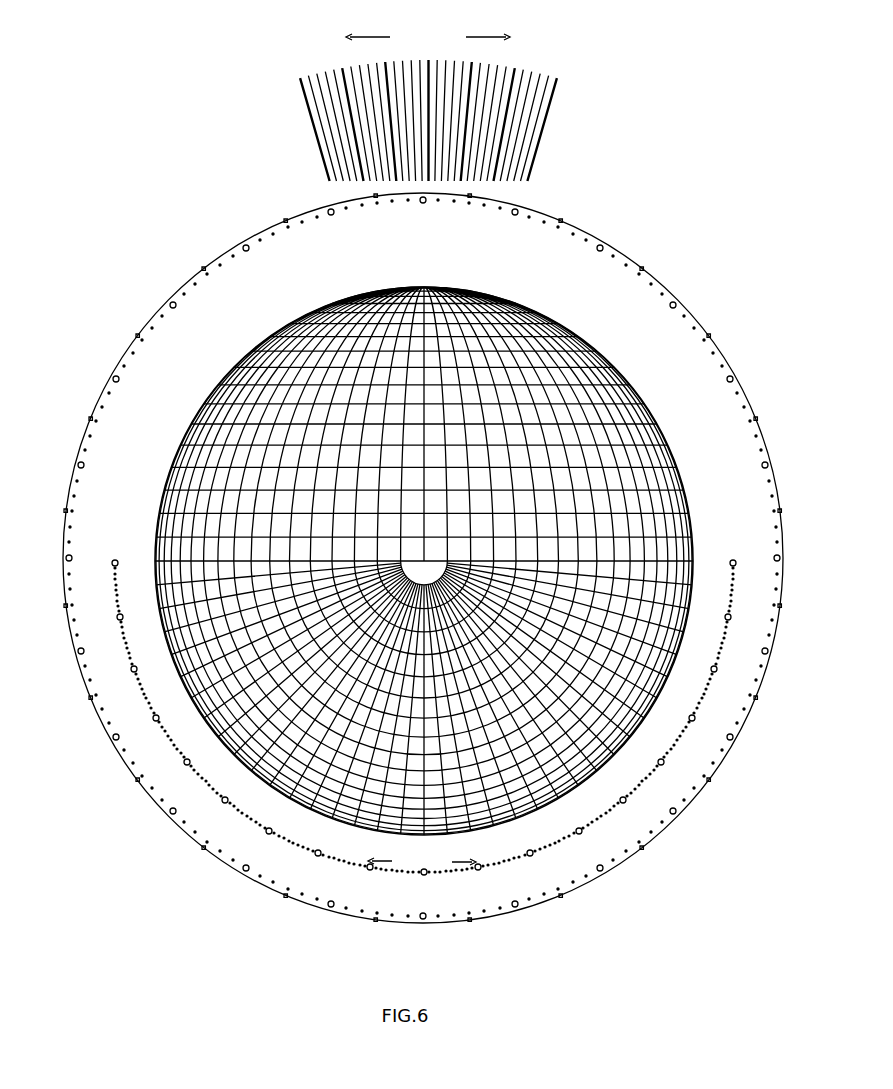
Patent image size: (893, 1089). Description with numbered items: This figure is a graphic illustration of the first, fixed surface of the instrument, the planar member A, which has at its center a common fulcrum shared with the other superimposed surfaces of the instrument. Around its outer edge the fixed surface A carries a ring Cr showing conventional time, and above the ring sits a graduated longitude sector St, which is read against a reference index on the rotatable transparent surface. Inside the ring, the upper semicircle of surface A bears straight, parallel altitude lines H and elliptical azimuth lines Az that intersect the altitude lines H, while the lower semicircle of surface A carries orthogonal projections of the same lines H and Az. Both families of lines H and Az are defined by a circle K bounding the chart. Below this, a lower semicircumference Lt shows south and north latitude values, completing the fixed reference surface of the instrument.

The fixed planar member A is at (417, 495).
The graduated longitude sector St is at (313, 134).
The conventional time ring Cr is at (653, 845).
The circle K is at (654, 411).
The altitude lines H is at (206, 443).
The azimuth lines Az is at (226, 478).
The latitude semicircumference Lt is at (689, 732).